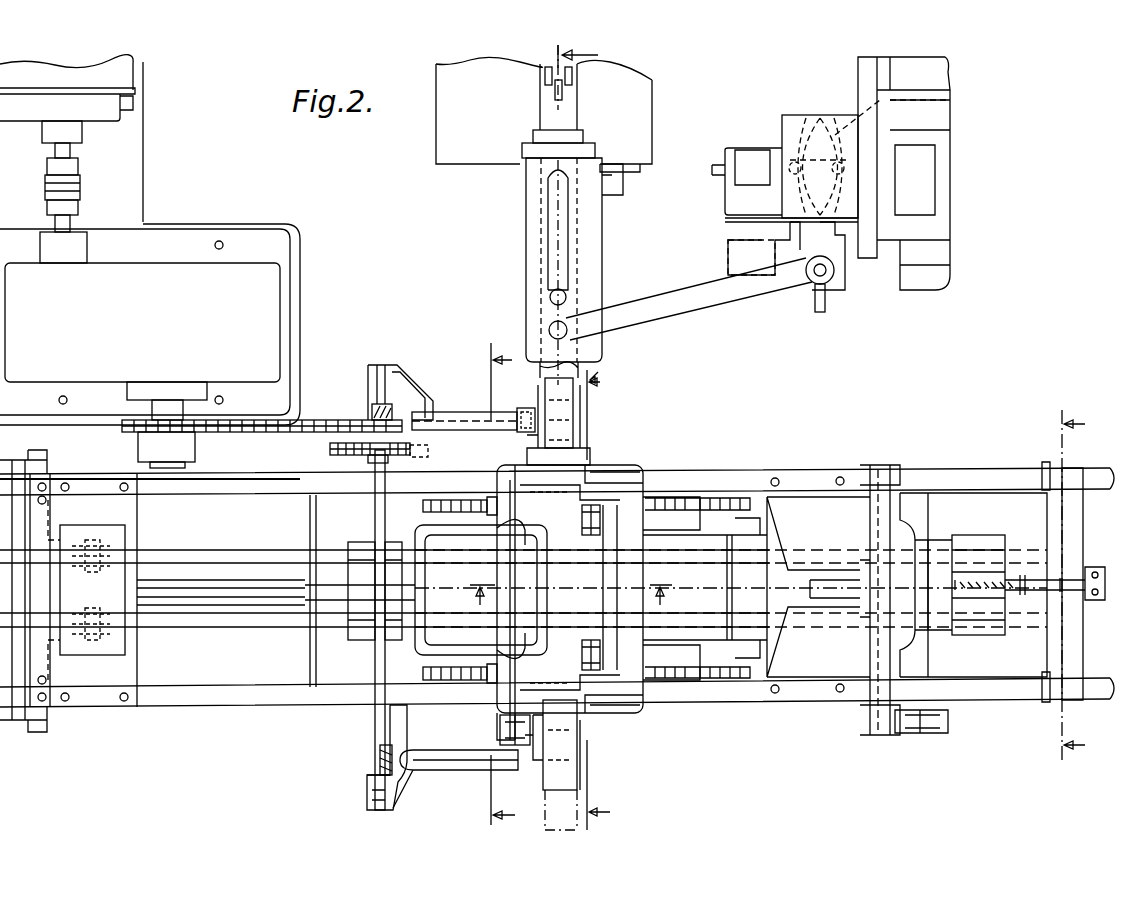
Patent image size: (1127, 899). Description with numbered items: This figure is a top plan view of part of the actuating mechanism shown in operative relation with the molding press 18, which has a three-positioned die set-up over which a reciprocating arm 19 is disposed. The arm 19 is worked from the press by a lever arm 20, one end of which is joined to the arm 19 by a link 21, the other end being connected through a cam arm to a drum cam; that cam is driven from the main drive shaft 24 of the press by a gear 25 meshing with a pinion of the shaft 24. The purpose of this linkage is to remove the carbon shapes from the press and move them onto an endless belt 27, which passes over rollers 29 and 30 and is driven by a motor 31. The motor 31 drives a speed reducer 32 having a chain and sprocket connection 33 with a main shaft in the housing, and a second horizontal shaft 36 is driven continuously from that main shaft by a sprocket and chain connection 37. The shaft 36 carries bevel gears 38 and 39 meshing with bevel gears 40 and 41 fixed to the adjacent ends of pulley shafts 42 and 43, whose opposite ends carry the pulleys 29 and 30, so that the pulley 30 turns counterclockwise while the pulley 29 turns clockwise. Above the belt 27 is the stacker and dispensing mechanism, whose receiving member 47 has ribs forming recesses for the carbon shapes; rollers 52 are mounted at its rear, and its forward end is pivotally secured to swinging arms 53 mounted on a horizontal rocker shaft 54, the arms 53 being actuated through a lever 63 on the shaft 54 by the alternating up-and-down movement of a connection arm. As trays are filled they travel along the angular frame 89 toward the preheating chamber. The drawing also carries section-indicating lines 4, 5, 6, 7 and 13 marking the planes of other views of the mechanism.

The motor 31 is at (140, 66).
The speed reducer 32 is at (262, 302).
The chain and sprocket connection 33 is at (312, 420).
The bevel gear 38 is at (372, 410).
The bevel gear 40 is at (395, 372).
The pulley shaft 42 is at (455, 412).
The sprocket and chain connection 37 is at (340, 441).
The shaft 36 is at (375, 676).
The angular frame 89 is at (236, 478).
The receiving member 47 is at (600, 612).
The rocker shaft 54 is at (510, 577).
The swinging arms 53 is at (497, 528).
The rollers 52 is at (600, 515).
The lever 63 is at (500, 725).
The roller 30 is at (580, 745).
The endless belt 27 is at (570, 780).
The pulley shaft 43 is at (470, 760).
The bevel gear 39 is at (367, 770).
The bevel gear 41 is at (380, 752).
The roller 29 is at (580, 432).
The link 21 is at (548, 300).
The reciprocating arm 19 is at (540, 112).
The molding press 18 is at (625, 92).
The lever arm 20 is at (660, 300).
The gear 25 is at (790, 235).
The main drive shaft 24 is at (782, 130).
The section line 5- 5 is at (584, 212).
The section line 6- 6 is at (598, 600).
The section line 7- 7 is at (503, 584).
The section line 4- 4 is at (566, 599).
The section line 13- 13 is at (1079, 585).